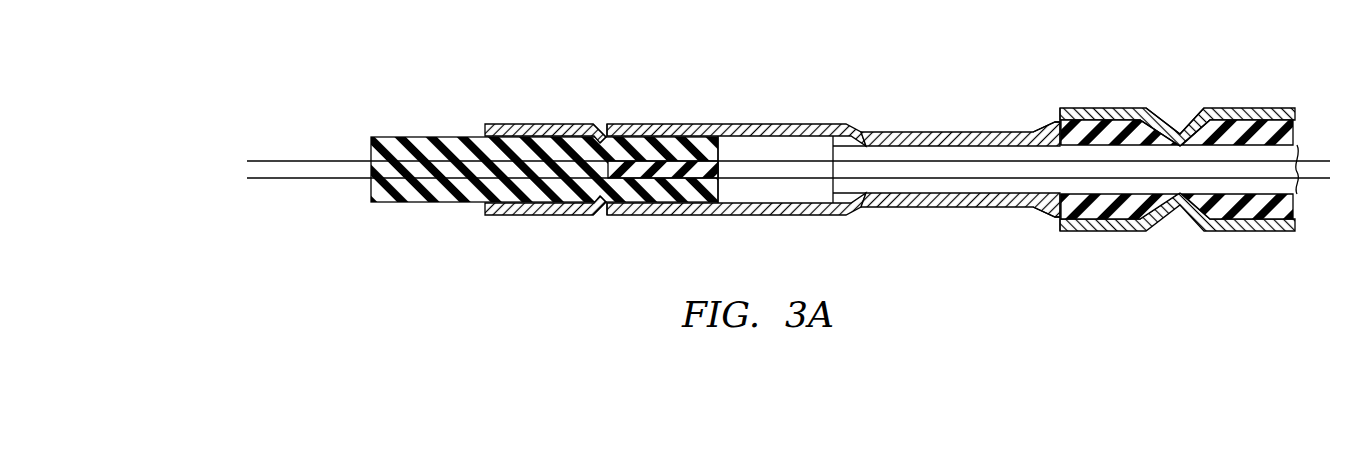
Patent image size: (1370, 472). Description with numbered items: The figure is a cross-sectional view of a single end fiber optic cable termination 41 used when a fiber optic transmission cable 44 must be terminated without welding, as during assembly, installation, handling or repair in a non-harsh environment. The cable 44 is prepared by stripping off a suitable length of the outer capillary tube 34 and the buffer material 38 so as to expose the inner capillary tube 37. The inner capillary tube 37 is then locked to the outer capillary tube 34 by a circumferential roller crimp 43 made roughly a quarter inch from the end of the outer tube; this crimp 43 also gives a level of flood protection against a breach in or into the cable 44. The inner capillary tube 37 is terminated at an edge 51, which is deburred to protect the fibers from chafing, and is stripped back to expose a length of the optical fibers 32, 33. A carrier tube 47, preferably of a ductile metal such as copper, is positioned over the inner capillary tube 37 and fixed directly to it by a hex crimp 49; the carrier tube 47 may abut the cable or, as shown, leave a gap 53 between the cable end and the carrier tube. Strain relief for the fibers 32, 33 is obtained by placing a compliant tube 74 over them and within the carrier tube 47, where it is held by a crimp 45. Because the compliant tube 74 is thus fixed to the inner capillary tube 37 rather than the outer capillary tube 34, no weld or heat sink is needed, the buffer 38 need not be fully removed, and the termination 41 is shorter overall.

The optical fiber 32 is at (275, 159).
The optical fiber 33 is at (299, 181).
The outer capillary tube 34 is at (1292, 232).
The inner capillary tube 37 is at (1291, 155).
The buffer material 38 is at (1131, 220).
The termination 41 is at (675, 112).
The crimp 43 is at (1178, 124).
The fiber optic transmission cable 44 is at (1177, 263).
The crimp 45 is at (602, 218).
The carrier tube 47 is at (715, 219).
The hex crimp 49 is at (947, 132).
The edge 51 is at (833, 137).
The gap 53 is at (1050, 220).
The compliant tube 74 is at (428, 204).